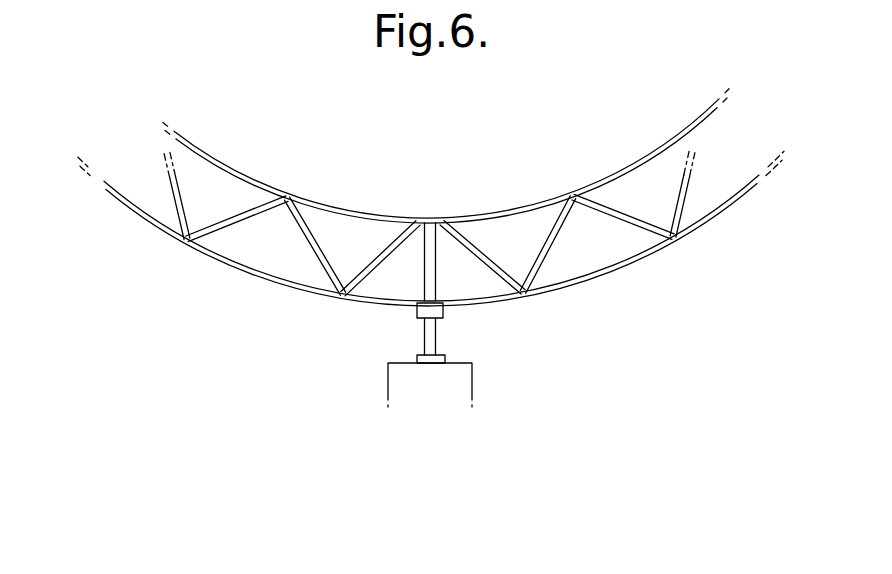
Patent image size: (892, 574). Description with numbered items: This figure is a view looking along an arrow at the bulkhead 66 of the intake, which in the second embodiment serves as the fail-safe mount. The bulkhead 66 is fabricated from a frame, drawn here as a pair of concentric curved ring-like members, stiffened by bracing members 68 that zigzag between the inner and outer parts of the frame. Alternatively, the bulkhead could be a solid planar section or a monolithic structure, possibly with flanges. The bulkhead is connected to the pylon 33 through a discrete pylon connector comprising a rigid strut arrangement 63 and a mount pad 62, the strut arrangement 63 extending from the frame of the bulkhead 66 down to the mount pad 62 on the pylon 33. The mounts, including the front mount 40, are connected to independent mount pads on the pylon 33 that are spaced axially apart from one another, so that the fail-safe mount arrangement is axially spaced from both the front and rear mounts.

The front mount 40 is at (431, 231).
The bulkhead 66 is at (436, 268).
The bracing members 68 is at (320, 232).
The rigid strut arrangement 63 is at (424, 335).
The mount pad 62 is at (417, 358).
The pylon 33 is at (472, 380).